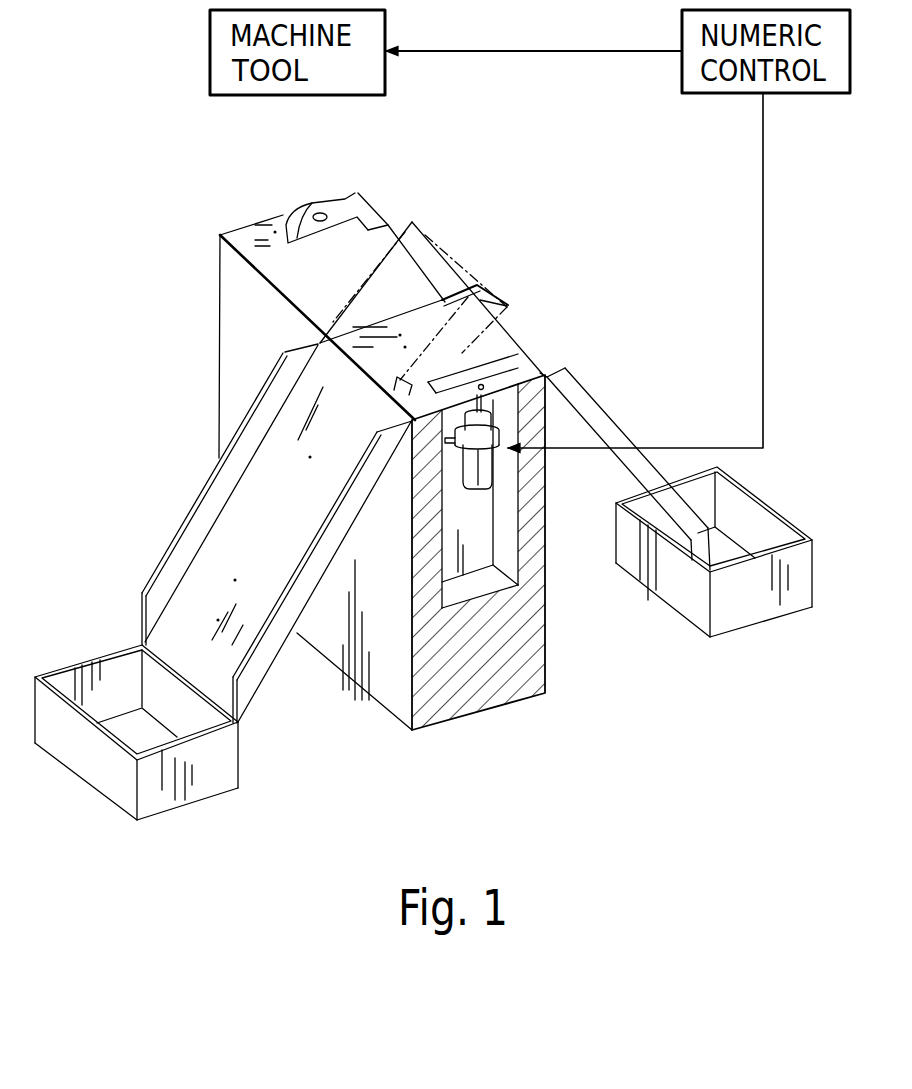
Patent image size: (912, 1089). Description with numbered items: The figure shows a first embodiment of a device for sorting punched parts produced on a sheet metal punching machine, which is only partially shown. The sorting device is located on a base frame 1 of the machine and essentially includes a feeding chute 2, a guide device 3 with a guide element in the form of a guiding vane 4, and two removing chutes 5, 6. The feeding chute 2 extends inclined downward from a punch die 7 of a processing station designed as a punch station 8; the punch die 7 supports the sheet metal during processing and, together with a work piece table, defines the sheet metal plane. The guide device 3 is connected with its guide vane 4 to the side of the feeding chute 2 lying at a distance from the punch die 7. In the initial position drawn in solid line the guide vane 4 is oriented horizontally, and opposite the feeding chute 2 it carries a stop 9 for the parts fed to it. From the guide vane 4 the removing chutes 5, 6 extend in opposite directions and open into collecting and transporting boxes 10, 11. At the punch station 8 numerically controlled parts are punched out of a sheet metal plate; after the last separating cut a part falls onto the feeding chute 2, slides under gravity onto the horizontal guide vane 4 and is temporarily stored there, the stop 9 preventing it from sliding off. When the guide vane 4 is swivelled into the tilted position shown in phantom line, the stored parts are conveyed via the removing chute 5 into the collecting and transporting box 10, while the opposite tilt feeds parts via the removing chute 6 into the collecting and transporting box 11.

The base frame 1 is at (522, 657).
The feeding chute 2 is at (330, 283).
The guide device 3 is at (500, 246).
The guiding vane 4 is at (450, 284).
The removing chute 5 is at (275, 510).
The removing chute 6 is at (598, 425).
The punch die 7 is at (322, 213).
The punch station 8 is at (208, 221).
The stop 9 is at (458, 345).
The collecting and transporting box 10 is at (217, 767).
The collecting and transporting box 11 is at (762, 602).